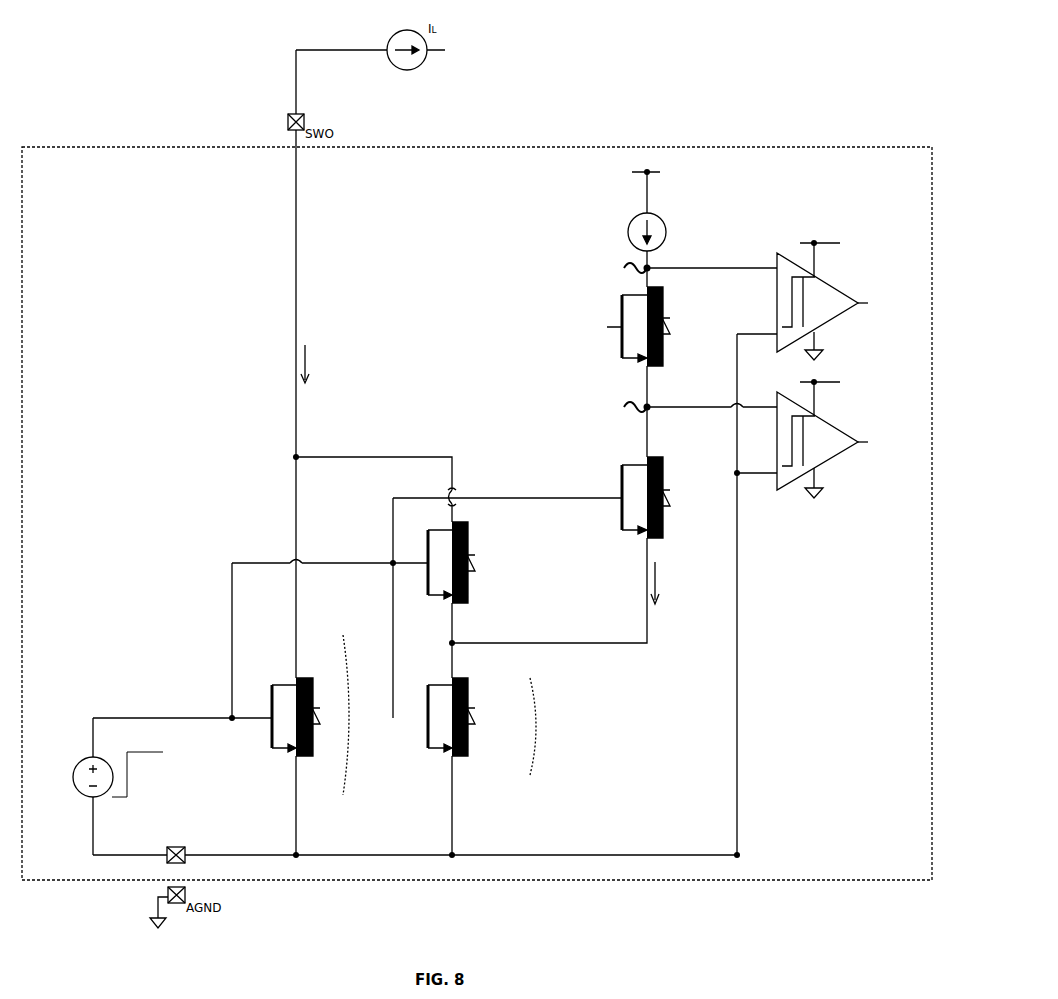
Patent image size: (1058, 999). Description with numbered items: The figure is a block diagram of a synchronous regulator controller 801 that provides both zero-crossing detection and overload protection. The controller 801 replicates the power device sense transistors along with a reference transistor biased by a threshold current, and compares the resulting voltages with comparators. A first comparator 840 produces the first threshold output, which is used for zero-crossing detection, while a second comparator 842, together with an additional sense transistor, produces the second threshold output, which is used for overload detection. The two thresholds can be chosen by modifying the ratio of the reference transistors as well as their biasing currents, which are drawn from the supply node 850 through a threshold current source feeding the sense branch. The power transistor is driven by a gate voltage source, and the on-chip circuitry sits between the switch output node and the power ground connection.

The synchronous regulator controller 801 is at (477, 513).
The threshold current source supply 850 is at (660, 172).
The comparator 842 is at (830, 284).
The first comparator 840 is at (830, 424).